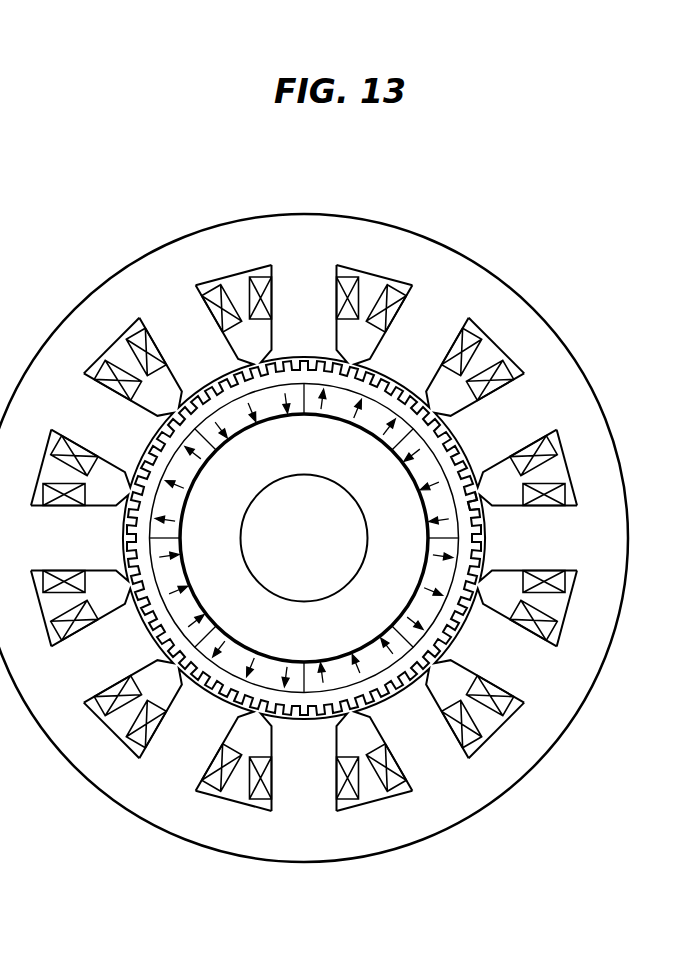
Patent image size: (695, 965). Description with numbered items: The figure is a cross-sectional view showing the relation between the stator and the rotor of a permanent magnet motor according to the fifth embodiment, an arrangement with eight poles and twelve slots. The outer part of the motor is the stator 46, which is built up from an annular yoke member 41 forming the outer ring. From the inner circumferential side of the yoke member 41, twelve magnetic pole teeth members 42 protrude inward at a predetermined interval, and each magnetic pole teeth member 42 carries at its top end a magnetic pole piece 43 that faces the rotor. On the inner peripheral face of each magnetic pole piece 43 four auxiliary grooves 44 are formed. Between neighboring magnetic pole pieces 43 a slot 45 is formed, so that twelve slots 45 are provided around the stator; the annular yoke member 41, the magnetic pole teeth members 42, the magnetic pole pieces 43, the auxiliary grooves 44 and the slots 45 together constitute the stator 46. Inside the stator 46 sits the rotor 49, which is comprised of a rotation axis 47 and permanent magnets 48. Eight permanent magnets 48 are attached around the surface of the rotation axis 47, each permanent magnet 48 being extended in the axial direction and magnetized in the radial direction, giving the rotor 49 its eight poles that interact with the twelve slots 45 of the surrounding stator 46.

The annular yoke member 41 is at (507, 308).
The magnetic pole teeth members 42 is at (535, 392).
The magnetic pole pieces 43 is at (467, 528).
The auxiliary grooves 44 is at (480, 532).
The slot 45 is at (470, 493).
The stator 46 is at (673, 278).
The rotation axis 47 is at (367, 615).
The permanent magnets 48 is at (363, 673).
The rotor 49 is at (641, 811).